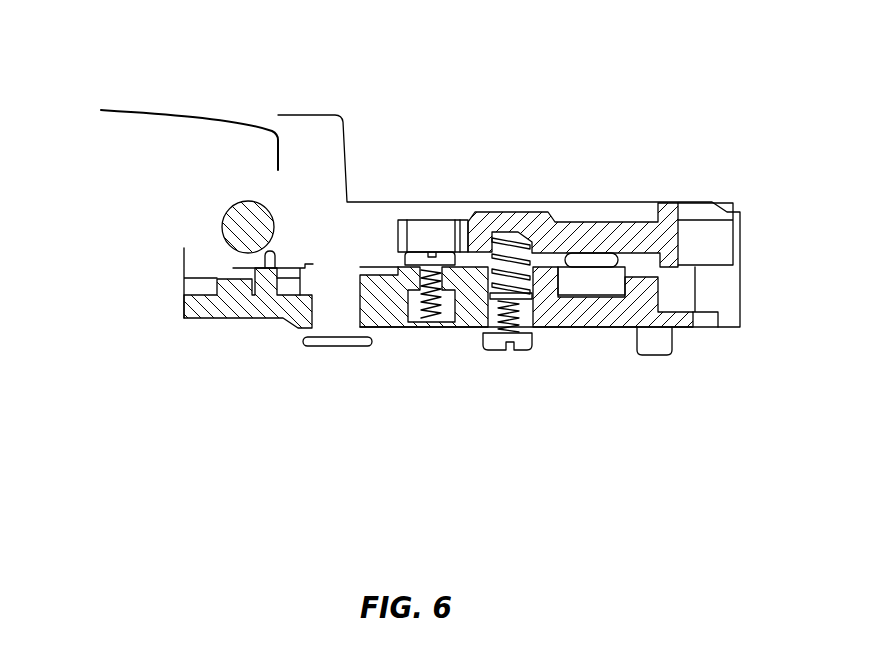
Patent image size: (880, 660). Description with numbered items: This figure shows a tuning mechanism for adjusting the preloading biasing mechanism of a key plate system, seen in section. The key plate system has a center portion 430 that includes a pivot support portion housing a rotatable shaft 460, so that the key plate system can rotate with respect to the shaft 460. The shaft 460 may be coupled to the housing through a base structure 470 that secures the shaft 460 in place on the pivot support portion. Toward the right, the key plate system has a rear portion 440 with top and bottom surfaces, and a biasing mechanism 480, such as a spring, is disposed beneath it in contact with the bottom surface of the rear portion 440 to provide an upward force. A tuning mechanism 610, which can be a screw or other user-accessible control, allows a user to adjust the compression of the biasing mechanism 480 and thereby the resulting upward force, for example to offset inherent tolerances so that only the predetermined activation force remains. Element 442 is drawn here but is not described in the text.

The center portion 430 is at (293, 113).
The rear portion 440 is at (527, 222).
The pin 442 is at (607, 258).
The shaft 460 is at (226, 236).
The base structure 470 is at (183, 290).
The biasing mechanism 480 is at (512, 284).
The tuning mechanism 610 is at (518, 350).